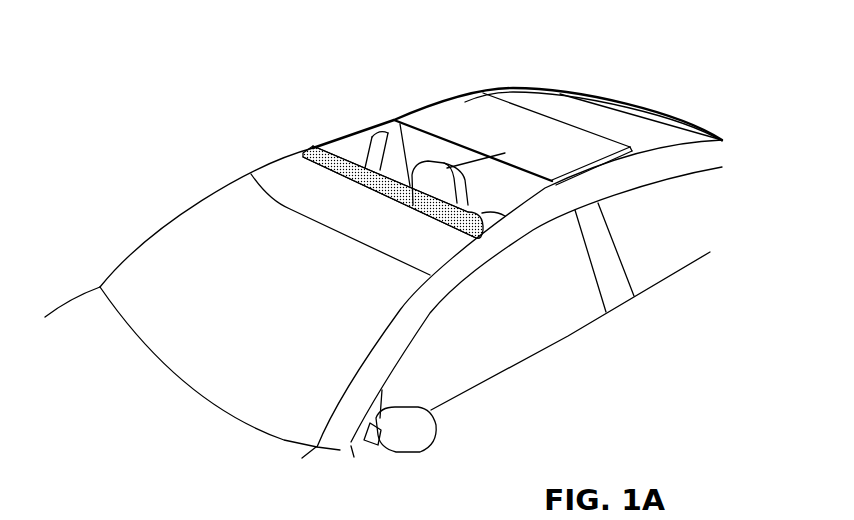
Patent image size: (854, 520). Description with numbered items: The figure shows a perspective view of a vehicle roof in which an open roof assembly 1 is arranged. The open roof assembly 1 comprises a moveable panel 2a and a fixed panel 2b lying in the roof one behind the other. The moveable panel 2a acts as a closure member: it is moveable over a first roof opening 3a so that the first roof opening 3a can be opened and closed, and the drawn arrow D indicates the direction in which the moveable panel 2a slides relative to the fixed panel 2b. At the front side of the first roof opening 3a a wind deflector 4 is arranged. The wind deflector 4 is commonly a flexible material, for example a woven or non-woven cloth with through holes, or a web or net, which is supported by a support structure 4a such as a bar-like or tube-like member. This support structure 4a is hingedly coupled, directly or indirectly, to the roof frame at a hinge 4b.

The open roof assembly 1 is at (600, 84).
The moveable panel 2a is at (538, 141).
The fixed panel 2b is at (612, 125).
The first roof opening 3a is at (438, 153).
The wind deflector 4 is at (379, 171).
The support structure 4a is at (497, 211).
The hinge 4b is at (328, 169).
The sliding direction D is at (441, 82).